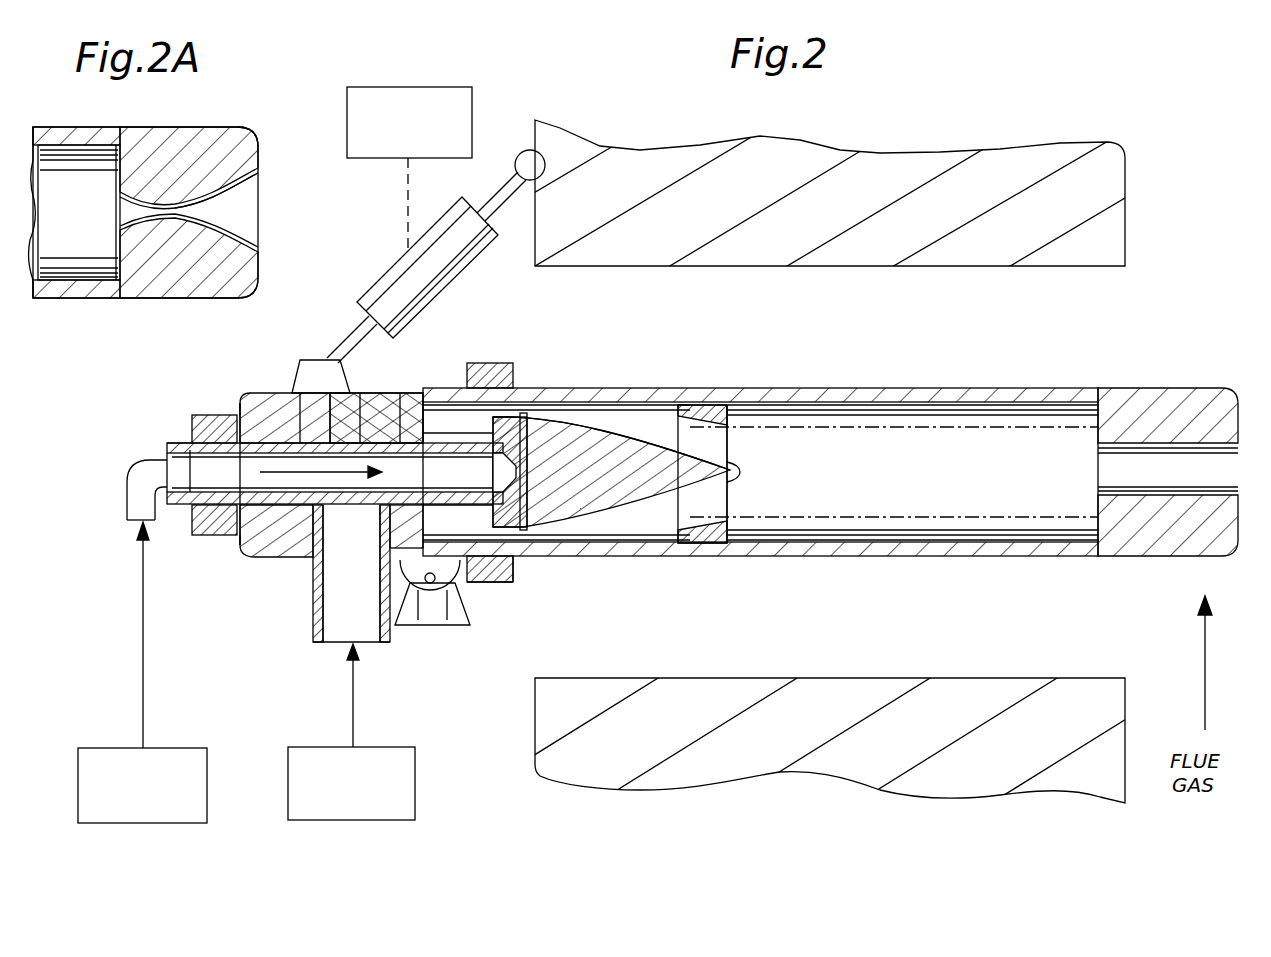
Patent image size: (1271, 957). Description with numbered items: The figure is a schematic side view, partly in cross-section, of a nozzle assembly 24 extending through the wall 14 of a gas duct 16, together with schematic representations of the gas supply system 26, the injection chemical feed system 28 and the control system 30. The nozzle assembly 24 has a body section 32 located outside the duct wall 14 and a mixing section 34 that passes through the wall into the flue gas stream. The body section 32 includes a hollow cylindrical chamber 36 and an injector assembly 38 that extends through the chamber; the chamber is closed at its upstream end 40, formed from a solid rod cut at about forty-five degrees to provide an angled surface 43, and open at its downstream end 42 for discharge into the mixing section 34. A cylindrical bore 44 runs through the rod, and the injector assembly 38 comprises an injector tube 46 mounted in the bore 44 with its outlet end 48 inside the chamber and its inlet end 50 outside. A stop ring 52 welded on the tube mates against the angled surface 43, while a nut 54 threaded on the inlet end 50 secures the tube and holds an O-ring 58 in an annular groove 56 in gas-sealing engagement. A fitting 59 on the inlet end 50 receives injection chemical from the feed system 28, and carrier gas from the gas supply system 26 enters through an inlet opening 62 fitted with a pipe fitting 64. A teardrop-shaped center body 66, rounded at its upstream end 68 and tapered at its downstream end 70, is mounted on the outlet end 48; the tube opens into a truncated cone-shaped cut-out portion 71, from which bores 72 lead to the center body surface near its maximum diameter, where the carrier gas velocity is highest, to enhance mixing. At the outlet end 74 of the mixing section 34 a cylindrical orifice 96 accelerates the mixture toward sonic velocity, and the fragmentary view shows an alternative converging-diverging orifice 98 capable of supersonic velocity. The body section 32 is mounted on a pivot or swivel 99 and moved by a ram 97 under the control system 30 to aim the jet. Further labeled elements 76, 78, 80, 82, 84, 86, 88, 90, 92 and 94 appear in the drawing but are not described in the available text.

In FIG. 2, the wall 14 is at (842, 218).
In FIG. 2, the gas duct 16 is at (1225, 122).
In FIG. 2A, the nozzle assembly 24 is at (145, 212).
In FIG. 2, the nozzle assembly 24 is at (224, 372).
In FIG. 2, the gas supply system 26 is at (365, 792).
In FIG. 2, the injection chemical feed system 28 is at (157, 796).
In FIG. 2, the control system 30 is at (424, 130).
In FIG. 2, the body section 32 is at (450, 305).
In FIG. 2A, the mixing section 34 is at (95, 303).
In FIG. 2, the mixing section 34 is at (735, 382).
In FIG. 2, the hollow cylindrical chamber 36 is at (440, 400).
In FIG. 2, the injector assembly 38 is at (185, 505).
In FIG. 2, the closed end 40 is at (246, 395).
In FIG. 2, the downstream end 42 is at (456, 578).
In FIG. 2, the angled surface 43 is at (428, 405).
In FIG. 2, the cylindrical bore 44 is at (395, 430).
In FIG. 2, the injector tube 46 is at (358, 430).
In FIG. 2, the outlet end 48 is at (572, 440).
In FIG. 2, the inlet end 50 is at (166, 445).
In FIG. 2, the stop ring 52 is at (268, 560).
In FIG. 2, the nut 54 is at (195, 420).
In FIG. 2, the annular groove 56 is at (320, 360).
In FIG. 2, the O-ring 58 is at (246, 532).
In FIG. 2, the fitting 59 is at (136, 462).
In FIG. 2, the inlet opening 62 is at (318, 600).
In FIG. 2, the pipe fitting 64 is at (325, 640).
In FIG. 2, the center body 66 is at (712, 445).
In FIG. 2, the upstream end 68 is at (506, 430).
In FIG. 2, the downstream end 70 is at (740, 462).
In FIG. 2, the cut-out portion 71 is at (495, 472).
In FIG. 2, the bores 72 is at (612, 452).
In FIG. 2A, the outlet end 74 is at (238, 125).
In FIG. 2, the outlet end 74 is at (1230, 378).
In FIG. 2, the mixing chamber 76 is at (922, 440).
In FIG. 2, the tube bore 78 is at (542, 560).
In FIG. 2, the flange 80 is at (480, 370).
In FIG. 2, the flange 82 is at (500, 370).
In FIG. 2, the bolt 84 is at (516, 578).
In FIG. 2, the washer 86 is at (507, 560).
In FIG. 2, the plate 88 is at (524, 400).
In FIG. 2, the axis line 90 is at (702, 538).
In FIG. 2, the ring face 92 is at (722, 400).
In FIG. 2, the axis line 94 is at (727, 522).
In FIG. 2, the cylindrical orifice 96 is at (1238, 480).
In FIG. 2, the ram 97 is at (440, 276).
In FIG. 2A, the converging-diverging orifice 98 is at (245, 203).
In FIG. 2, the pivot or swivel 99 is at (435, 628).